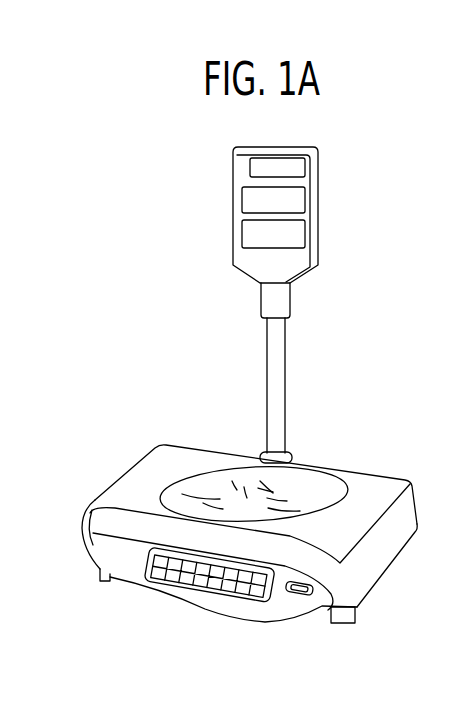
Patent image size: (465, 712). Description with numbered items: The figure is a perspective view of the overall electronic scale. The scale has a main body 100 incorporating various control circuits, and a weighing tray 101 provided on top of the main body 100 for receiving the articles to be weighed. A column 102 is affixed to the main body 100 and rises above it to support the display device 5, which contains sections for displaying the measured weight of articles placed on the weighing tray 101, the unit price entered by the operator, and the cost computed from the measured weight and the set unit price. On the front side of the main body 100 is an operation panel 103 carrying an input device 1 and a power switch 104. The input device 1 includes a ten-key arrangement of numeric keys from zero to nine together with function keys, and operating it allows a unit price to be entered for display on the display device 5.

The display device 5 is at (318, 155).
The column 102 is at (280, 386).
The weighing tray 101 is at (367, 482).
The main body 100 is at (358, 606).
The operation panel 103 is at (117, 570).
The input device 1 is at (142, 582).
The power switch 104 is at (313, 597).